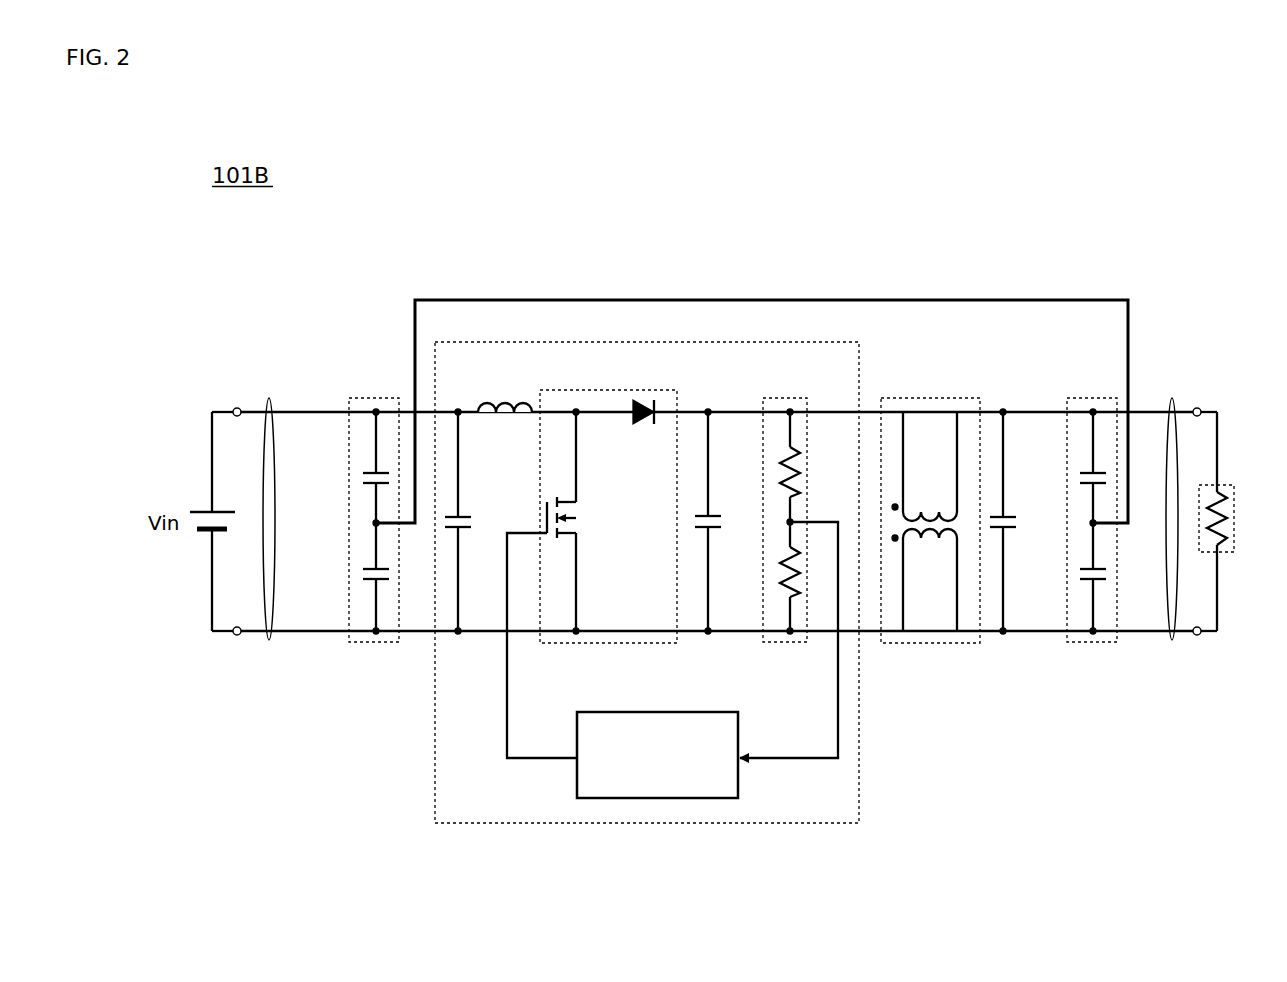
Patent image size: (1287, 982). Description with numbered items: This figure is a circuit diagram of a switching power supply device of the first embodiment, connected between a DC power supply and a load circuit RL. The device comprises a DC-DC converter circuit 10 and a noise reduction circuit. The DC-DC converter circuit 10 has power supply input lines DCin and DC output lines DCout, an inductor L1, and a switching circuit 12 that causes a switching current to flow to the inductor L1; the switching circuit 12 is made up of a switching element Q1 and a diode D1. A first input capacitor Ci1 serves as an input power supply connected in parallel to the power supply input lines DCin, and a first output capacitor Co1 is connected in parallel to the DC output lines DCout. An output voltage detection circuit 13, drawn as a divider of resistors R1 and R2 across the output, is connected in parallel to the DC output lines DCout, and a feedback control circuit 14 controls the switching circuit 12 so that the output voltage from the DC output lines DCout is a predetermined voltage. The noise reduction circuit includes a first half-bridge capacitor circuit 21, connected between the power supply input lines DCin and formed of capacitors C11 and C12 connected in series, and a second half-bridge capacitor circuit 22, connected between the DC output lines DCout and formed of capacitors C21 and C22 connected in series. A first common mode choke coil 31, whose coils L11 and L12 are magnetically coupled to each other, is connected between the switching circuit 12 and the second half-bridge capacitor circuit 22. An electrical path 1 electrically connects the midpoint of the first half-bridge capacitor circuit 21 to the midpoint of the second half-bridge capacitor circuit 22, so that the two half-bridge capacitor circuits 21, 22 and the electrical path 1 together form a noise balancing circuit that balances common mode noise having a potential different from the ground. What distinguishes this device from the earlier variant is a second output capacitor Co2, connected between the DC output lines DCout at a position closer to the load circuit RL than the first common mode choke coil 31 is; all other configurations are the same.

The electrical path 1 is at (822, 300).
The DC-DC converter circuit 10 is at (710, 342).
The switching circuit 12 is at (607, 390).
The output voltage detection circuit 13 is at (781, 398).
The feedback control circuit 14 is at (648, 712).
The first half-bridge capacitor circuit 21 is at (372, 398).
The second half-bridge capacitor circuit 22 is at (1094, 398).
The first common mode choke coil 31 is at (927, 398).
The capacitor C11 is at (363, 477).
The capacitor C12 is at (363, 575).
The capacitor C21 is at (1080, 476).
The capacitor C22 is at (1080, 575).
The first input capacitor Ci1 is at (473, 521).
The first output capacitor Co1 is at (724, 521).
The second output capacitor Co2 is at (1018, 521).
The inductor L1 is at (505, 389).
The coil L11 is at (930, 466).
The coil L12 is at (930, 580).
The switching element Q1 is at (563, 583).
The diode D1 is at (633, 425).
The resistor R1 is at (780, 465).
The resistor R2 is at (780, 565).
The load circuit RL is at (1232, 521).
The power supply input lines DCin is at (269, 398).
The DC output lines DCout is at (1172, 398).